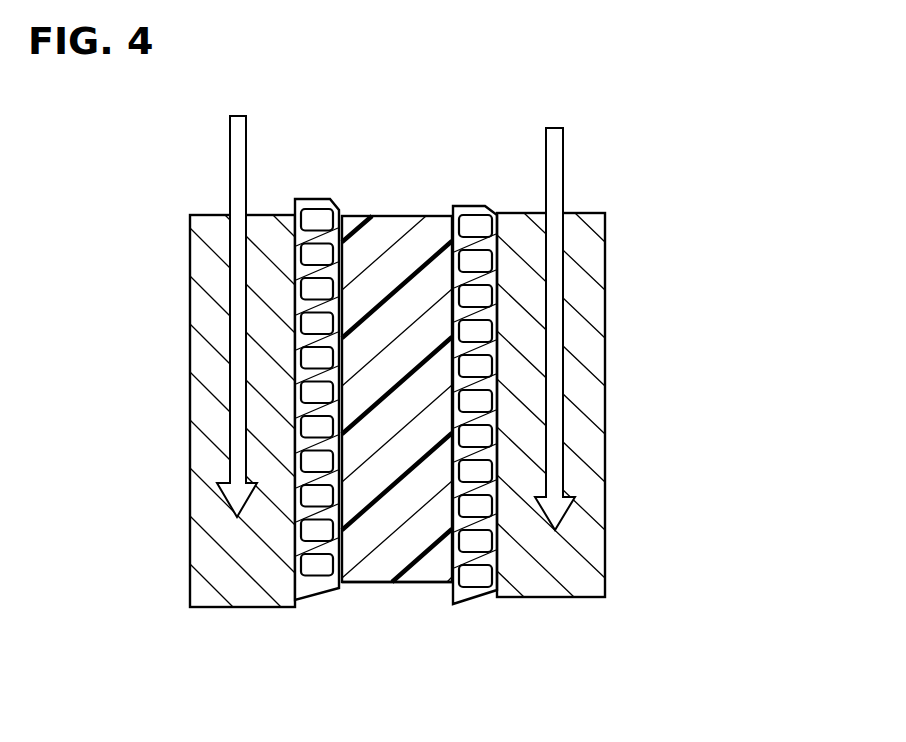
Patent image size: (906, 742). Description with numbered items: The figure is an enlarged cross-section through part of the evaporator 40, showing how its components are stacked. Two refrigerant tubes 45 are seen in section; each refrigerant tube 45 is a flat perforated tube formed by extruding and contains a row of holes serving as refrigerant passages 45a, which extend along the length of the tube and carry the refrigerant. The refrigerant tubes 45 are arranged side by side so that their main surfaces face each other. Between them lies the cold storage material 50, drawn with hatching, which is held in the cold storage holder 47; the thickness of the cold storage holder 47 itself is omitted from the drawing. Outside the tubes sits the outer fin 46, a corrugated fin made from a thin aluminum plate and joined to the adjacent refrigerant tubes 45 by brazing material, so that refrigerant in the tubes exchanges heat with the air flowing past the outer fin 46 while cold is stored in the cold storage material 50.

The evaporator 40 is at (442, 394).
The refrigerant tube 45 is at (483, 186).
The refrigerant passage 45a is at (330, 212).
The cold storage material 50 is at (432, 225).
The cold storage holder 47 is at (427, 597).
The outer fin 46 is at (560, 608).